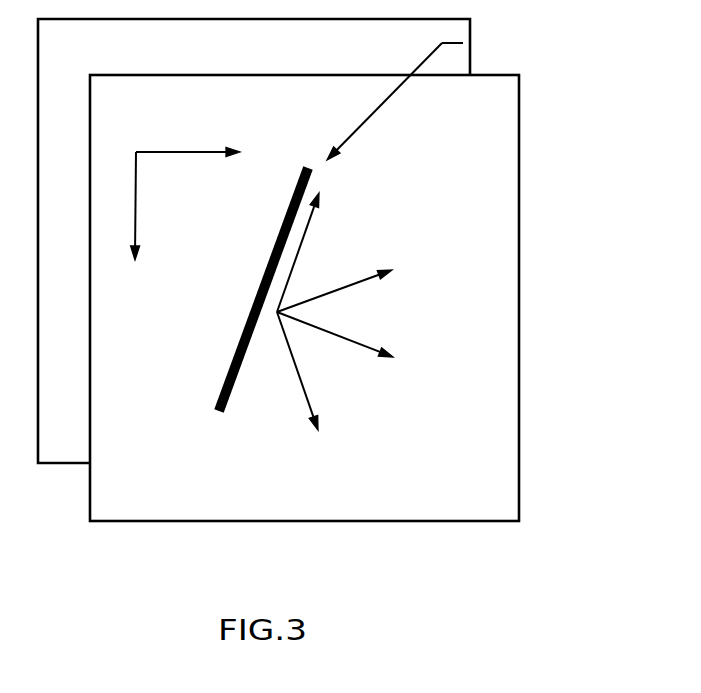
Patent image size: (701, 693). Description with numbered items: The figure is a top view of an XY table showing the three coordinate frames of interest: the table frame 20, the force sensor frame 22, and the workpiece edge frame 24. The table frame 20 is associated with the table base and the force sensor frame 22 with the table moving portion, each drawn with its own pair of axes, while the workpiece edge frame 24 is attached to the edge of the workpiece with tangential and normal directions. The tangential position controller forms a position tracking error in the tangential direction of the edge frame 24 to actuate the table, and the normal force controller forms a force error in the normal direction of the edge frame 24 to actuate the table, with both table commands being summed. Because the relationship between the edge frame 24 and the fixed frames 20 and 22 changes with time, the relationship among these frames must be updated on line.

The table frame 20 is at (254, 241).
The force sensor frame 22 is at (288, 391).
The workpiece edge frame 24 is at (369, 327).